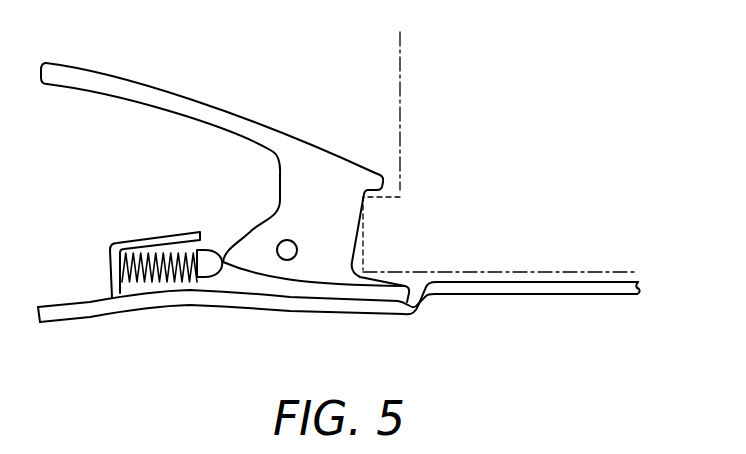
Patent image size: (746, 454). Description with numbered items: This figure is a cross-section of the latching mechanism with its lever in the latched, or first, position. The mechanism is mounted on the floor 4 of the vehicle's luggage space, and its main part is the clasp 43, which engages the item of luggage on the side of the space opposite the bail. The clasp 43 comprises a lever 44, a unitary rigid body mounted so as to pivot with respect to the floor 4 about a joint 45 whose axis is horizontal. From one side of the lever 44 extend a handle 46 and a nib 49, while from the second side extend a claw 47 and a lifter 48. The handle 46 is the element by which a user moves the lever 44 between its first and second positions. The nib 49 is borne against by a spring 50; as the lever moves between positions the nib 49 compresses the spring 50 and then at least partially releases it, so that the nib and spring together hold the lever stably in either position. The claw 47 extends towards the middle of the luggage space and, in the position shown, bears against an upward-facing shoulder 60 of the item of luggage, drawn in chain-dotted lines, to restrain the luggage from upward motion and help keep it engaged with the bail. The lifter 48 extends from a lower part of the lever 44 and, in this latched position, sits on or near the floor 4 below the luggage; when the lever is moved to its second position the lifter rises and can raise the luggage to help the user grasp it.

The floor 4 is at (530, 288).
The clasp 43 is at (238, 90).
The lever 44 is at (279, 200).
The joint 45 is at (287, 253).
The handle 46 is at (60, 72).
The claw 47 is at (375, 172).
The lifter 48 is at (397, 292).
The nib 49 is at (243, 255).
The spring 50 is at (155, 278).
The upward-facing shoulder 60 is at (382, 198).